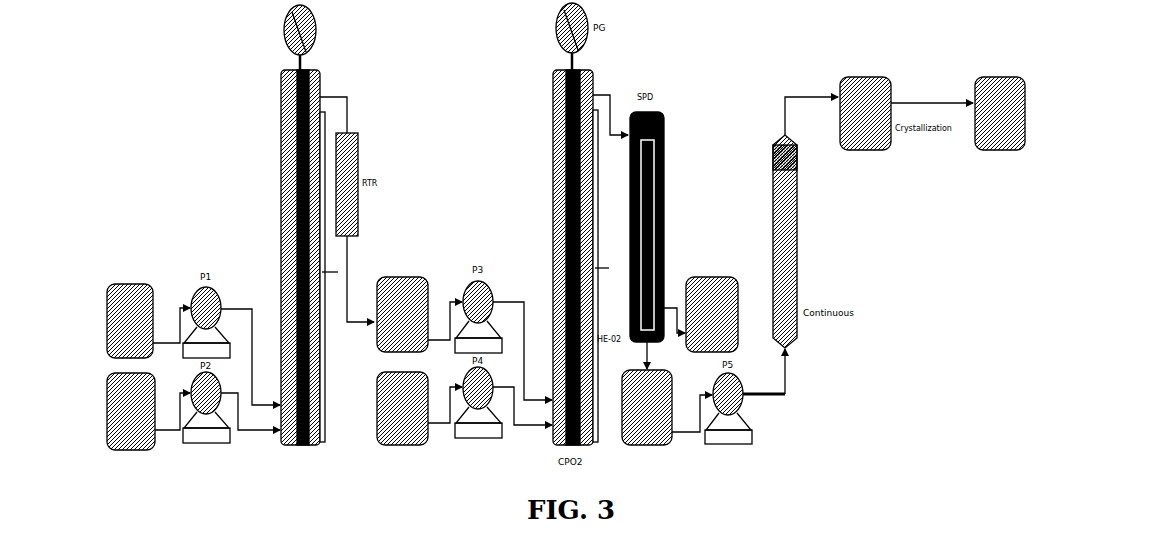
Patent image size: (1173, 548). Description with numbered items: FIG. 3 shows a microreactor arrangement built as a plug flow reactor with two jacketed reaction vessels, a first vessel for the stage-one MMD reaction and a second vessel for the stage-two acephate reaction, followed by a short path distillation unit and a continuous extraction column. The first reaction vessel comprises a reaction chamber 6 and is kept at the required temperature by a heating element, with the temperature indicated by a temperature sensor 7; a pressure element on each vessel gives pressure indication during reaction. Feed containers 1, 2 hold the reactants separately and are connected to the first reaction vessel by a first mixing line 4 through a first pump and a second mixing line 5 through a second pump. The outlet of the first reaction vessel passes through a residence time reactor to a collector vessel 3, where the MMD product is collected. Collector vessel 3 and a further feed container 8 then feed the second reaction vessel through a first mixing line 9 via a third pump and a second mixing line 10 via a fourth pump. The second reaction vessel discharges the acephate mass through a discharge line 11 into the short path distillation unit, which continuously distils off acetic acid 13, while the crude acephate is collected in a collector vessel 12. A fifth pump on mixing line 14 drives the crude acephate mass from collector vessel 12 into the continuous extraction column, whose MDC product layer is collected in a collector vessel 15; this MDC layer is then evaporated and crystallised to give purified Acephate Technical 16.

The feed container 1 is at (130, 321).
The feed container 2 is at (131, 411).
The collector vessel 3 is at (402, 314).
The first mixing line 4 is at (250, 348).
The second mixing line 5 is at (250, 402).
The reaction chamber 6 is at (281, 254).
The temperature sensor 7 is at (281, 118).
The feed container 8 is at (402, 408).
The first mixing line 9 is at (522, 342).
The second mixing line 10 is at (522, 397).
The discharge line 11 is at (610, 107).
The collector vessel 12 is at (647, 393).
The acetic acid 13 is at (701, 314).
The mixing line 14 is at (774, 372).
The collector vessel 15 is at (865, 113).
The purified Acephate Technical 16 is at (1000, 113).